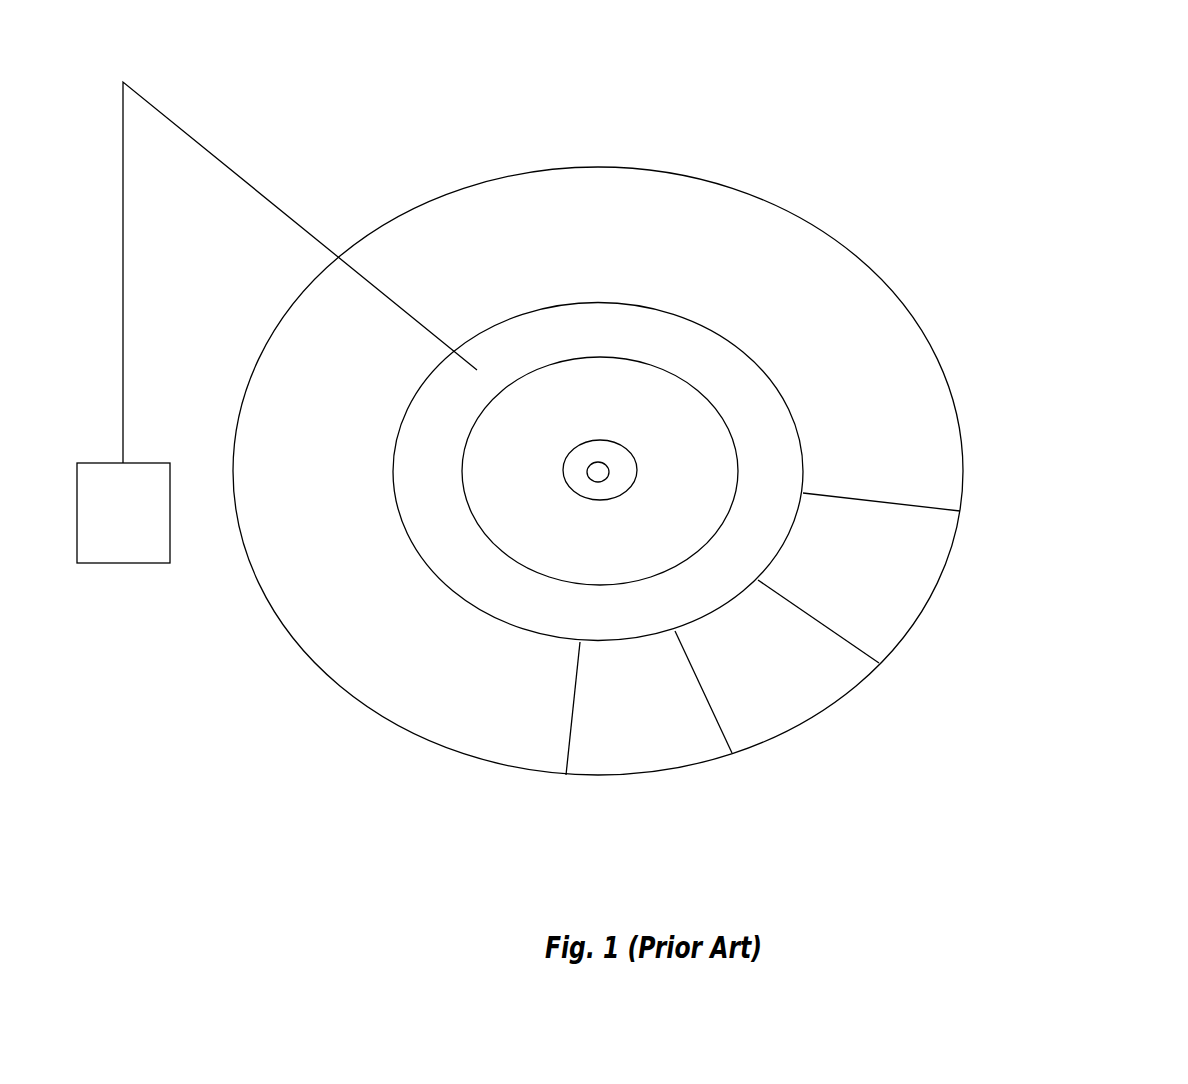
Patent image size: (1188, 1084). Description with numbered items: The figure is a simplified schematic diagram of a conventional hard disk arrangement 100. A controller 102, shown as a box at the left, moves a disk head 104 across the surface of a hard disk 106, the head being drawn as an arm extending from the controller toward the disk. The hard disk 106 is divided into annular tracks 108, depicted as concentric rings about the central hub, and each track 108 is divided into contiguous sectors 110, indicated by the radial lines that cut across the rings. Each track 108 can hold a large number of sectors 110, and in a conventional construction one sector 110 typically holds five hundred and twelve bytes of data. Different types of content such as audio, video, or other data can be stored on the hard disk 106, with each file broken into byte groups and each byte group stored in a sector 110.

The disk drive system 100 is at (1076, 85).
The controller 102 is at (123, 513).
The disk head 104 is at (212, 150).
The hard disk 106 is at (673, 175).
The annular tracks 108 is at (763, 410).
The sectors 110 is at (788, 652).